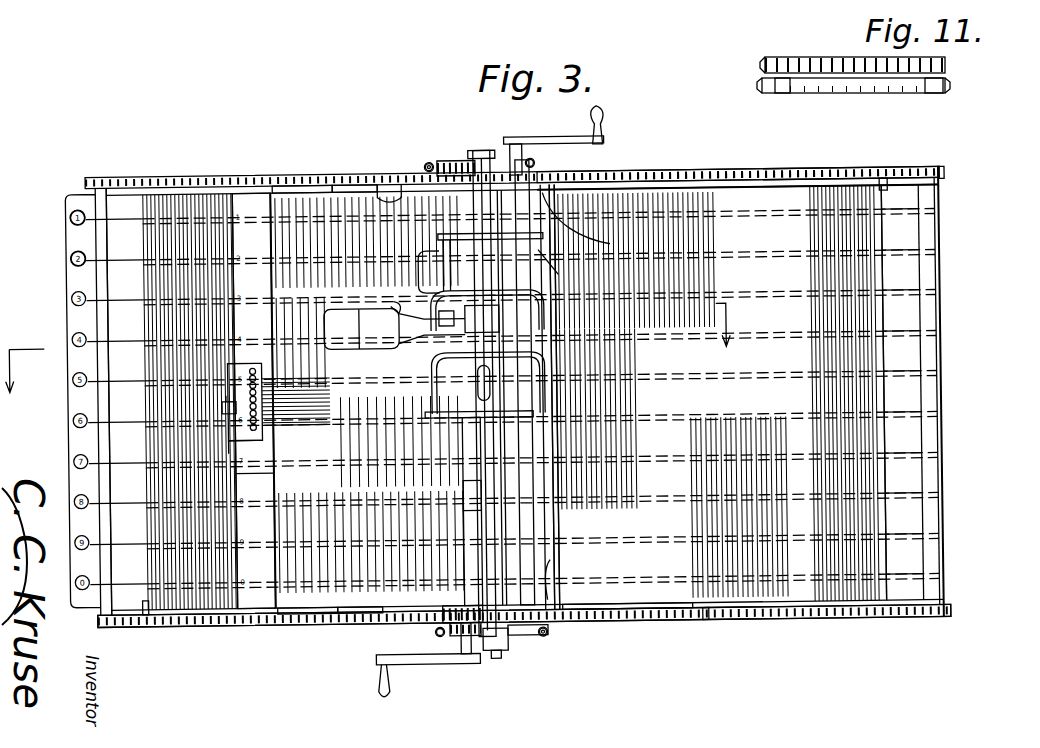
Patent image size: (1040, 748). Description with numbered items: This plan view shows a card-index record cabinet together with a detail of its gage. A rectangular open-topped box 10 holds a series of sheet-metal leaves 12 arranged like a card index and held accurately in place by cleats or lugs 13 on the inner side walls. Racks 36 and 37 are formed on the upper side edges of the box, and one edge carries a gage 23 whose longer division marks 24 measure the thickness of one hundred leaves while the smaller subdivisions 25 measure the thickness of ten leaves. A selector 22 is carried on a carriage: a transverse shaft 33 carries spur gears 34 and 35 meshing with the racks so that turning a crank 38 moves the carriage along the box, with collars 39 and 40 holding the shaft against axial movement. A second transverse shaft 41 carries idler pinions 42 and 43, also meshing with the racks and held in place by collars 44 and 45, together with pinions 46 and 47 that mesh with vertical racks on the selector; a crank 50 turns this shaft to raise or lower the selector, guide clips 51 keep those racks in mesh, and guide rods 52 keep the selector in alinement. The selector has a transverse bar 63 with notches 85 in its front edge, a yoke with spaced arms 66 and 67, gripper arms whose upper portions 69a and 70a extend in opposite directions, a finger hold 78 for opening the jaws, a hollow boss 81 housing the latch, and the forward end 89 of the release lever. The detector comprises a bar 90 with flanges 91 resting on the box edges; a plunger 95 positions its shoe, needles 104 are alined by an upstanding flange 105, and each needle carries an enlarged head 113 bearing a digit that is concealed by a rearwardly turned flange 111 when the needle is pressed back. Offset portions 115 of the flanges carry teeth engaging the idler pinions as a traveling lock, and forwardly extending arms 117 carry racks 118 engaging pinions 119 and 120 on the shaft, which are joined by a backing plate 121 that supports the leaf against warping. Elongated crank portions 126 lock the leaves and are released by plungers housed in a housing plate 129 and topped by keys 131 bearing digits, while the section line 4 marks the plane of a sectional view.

In FIG. 3, the section line 4- 4 is at (377, 354).
In FIG. 3, the box 10 is at (806, 618).
In FIG. 3, the leaves or plates 12 is at (788, 605).
In FIG. 3, the cleats or lugs 13 is at (886, 174).
In FIG. 3, the selector 22 is at (550, 360).
In FIG. 3, the gage 23 is at (696, 168).
In FIG. 11, the gage 23 is at (766, 86).
In FIG. 11, the longer division marks 24 is at (790, 93).
In FIG. 11, the smaller subdivisions 25 is at (840, 93).
In FIG. 3, the shaft 33 is at (562, 158).
In FIG. 3, the spur gear 34 is at (582, 180).
In FIG. 3, the spur gear 35 is at (556, 632).
In FIG. 3, the rack 36 is at (752, 168).
In FIG. 3, the rack 37 is at (706, 628).
In FIG. 3, the crank 38 is at (590, 128).
In FIG. 3, the collar 39 is at (510, 163).
In FIG. 3, the collar 40 is at (530, 652).
In FIG. 3, the second transverse shaft 41 is at (474, 558).
In FIG. 3, the idler pinion 42 is at (440, 192).
In FIG. 3, the idler pinion 43 is at (452, 606).
In FIG. 3, the collar 44 is at (456, 194).
In FIG. 3, the collar 45 is at (462, 604).
In FIG. 3, the pinion 46 is at (448, 158).
In FIG. 3, the pinion 47 is at (460, 655).
In FIG. 3, the crank 50 is at (396, 680).
In FIG. 3, the guide clips 51 is at (506, 655).
In FIG. 3, the guide rods 52 is at (427, 163).
In FIG. 3, the transverse bar 63 is at (500, 498).
In FIG. 3, the arm 66 is at (546, 300).
In FIG. 3, the arm 67 is at (500, 382).
In FIG. 3, the upper portion of gripper arm 69a is at (540, 424).
In FIG. 3, the upper portion of gripper arm 70a is at (560, 272).
In FIG. 3, the finger hold 78 is at (340, 328).
In FIG. 3, the hollow boss 81 is at (452, 340).
In FIG. 3, the notches 85 is at (468, 490).
In FIG. 3, the forward end of finger lever 89 is at (394, 306).
In FIG. 3, the bar 90 is at (245, 474).
In FIG. 3, the flanges 91 is at (264, 186).
In FIG. 3, the plunger 95 is at (225, 405).
In FIG. 3, the needles 104 is at (300, 394).
In FIG. 3, the upstanding flange 105 is at (300, 424).
In FIG. 3, the rearwardly turned flange 111 is at (255, 440).
In FIG. 3, the enlarged head 113 is at (266, 364).
In FIG. 3, the offset portions 115 is at (285, 181).
In FIG. 3, the forwardly extending arms 117 is at (334, 185).
In FIG. 3, the racks 118 is at (386, 192).
In FIG. 3, the pinion 119 is at (597, 222).
In FIG. 3, the pinion 120 is at (632, 622).
In FIG. 3, the plate 121 is at (546, 566).
In FIG. 3, the elongated crank portions 126 is at (122, 215).
In FIG. 3, the housing plate 129 is at (70, 260).
In FIG. 3, the keys 131 is at (71, 219).